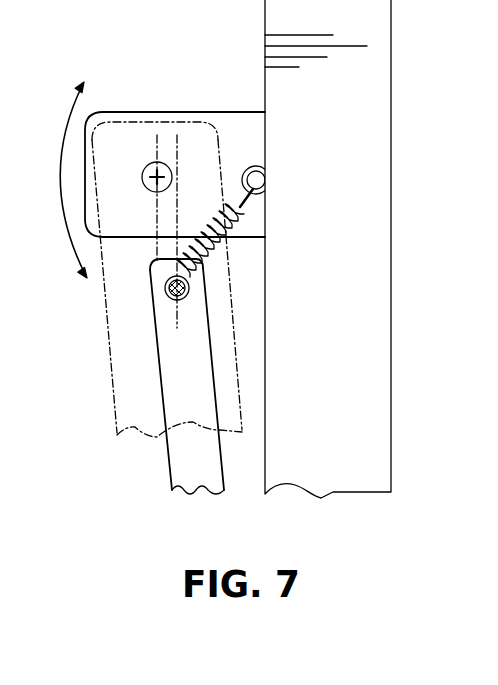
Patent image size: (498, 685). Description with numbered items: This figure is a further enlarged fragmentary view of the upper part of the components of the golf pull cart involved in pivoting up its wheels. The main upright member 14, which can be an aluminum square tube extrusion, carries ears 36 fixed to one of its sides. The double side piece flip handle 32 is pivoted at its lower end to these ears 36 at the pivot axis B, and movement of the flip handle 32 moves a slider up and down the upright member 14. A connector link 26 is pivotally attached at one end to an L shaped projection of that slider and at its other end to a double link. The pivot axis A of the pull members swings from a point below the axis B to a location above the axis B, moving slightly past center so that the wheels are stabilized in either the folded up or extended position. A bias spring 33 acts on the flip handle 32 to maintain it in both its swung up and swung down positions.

The main upright member 14 is at (368, 312).
The connector link 26 is at (183, 460).
The flip handle 32 is at (126, 341).
The bias spring 33 is at (224, 206).
The ears 36 is at (240, 133).
The pivot axis of the pull members A is at (190, 297).
The pivot axis of the flip handle B is at (148, 170).